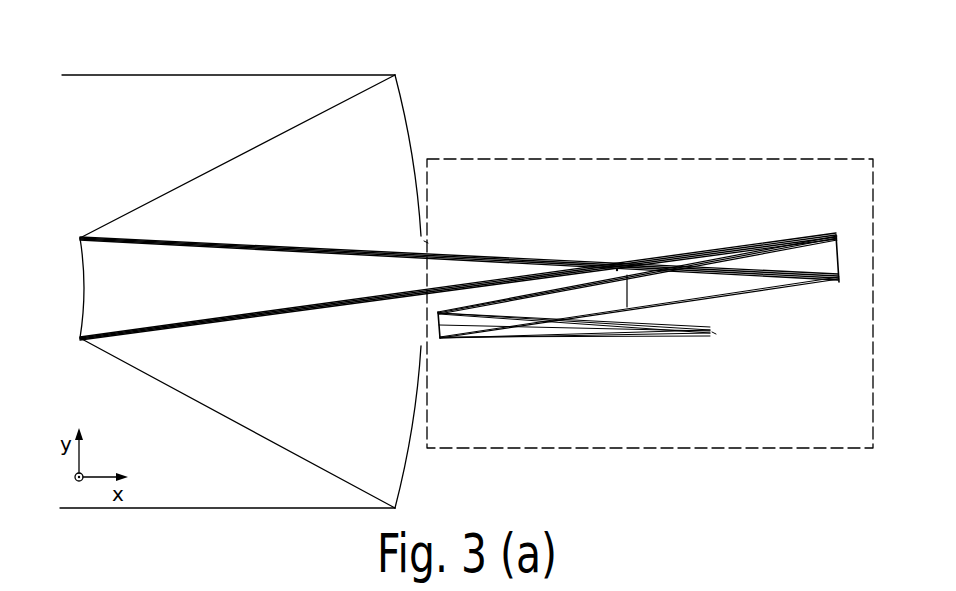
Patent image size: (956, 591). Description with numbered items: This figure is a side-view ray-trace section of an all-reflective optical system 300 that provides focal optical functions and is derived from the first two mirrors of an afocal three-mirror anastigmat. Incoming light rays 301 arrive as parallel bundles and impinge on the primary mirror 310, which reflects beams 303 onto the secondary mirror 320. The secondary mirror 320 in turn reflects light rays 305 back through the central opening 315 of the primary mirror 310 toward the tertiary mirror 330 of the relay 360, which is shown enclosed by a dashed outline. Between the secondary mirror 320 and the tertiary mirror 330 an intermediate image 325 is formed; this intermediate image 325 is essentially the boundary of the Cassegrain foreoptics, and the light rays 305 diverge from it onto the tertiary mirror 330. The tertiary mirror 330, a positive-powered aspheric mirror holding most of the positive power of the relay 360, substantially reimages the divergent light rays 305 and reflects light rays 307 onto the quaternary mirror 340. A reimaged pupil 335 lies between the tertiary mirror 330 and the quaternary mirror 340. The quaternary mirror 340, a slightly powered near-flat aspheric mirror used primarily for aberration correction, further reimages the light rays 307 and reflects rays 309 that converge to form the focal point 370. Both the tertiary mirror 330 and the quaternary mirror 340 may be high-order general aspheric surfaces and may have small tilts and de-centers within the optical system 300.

The optical system 300 is at (460, 52).
The incoming light rays 301 is at (227, 75).
The beams 303 is at (236, 157).
The light rays 305 is at (317, 249).
The light rays 307 is at (812, 288).
The rays 309 is at (612, 337).
The primary mirror 310 is at (406, 100).
The central opening 315 is at (427, 244).
The secondary mirror 320 is at (85, 276).
The intermediate image 325 is at (620, 266).
The tertiary mirror 330 is at (840, 250).
The reimaged pupil 335 is at (636, 290).
The quaternary mirror 340 is at (438, 330).
The relay 360 is at (753, 141).
The focal point 370 is at (714, 333).